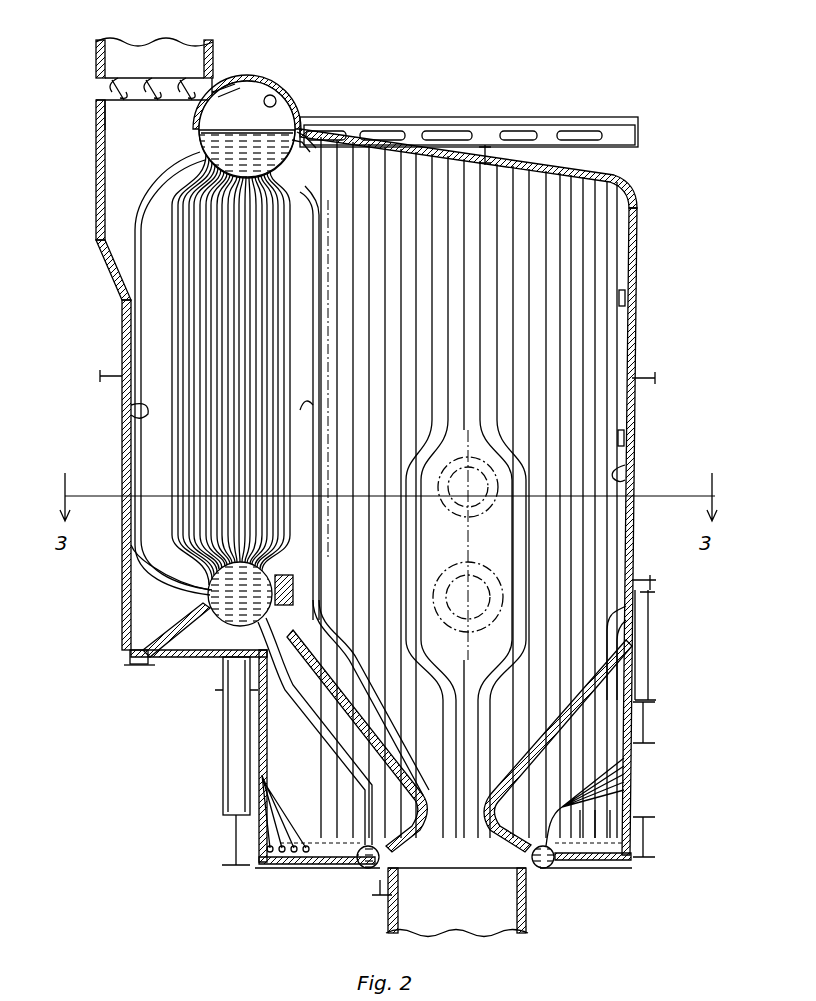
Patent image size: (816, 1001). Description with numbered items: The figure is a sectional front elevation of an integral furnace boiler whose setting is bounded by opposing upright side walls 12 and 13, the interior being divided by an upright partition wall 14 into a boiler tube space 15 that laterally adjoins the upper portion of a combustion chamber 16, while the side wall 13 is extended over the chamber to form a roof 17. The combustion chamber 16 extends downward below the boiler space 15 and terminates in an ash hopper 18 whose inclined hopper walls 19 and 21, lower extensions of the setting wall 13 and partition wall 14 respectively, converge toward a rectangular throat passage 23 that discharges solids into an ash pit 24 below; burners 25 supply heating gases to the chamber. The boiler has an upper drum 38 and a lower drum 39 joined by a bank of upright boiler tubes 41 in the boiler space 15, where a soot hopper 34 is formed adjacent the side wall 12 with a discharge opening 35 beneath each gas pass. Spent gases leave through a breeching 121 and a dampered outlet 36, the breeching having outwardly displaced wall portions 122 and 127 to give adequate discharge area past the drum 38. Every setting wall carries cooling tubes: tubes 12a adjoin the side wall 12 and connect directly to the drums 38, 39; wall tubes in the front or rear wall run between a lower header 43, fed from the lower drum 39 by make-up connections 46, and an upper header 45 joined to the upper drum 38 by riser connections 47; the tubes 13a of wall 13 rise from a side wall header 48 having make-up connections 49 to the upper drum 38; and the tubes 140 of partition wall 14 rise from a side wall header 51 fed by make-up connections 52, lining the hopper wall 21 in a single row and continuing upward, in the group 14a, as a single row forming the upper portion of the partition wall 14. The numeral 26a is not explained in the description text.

The side wall 12 is at (122, 343).
The fluid cooling tubes 12a is at (138, 418).
The side wall 13 is at (634, 335).
The fluid cooling tubes 13a is at (621, 470).
The interior partition wall 14 is at (314, 310).
The tube group 14a is at (320, 464).
The boiler tube space 15 is at (454, 487).
The combustion chamber 16 is at (466, 496).
The roof 17 is at (530, 134).
The ash hopper 18 is at (500, 768).
The inclined hopper wall 19 is at (558, 729).
The inclined hopper wall 21 is at (336, 678).
The throat passage 23 is at (457, 498).
The ash pit 24 is at (450, 902).
The burners 25 is at (452, 578).
The tube bend 26a is at (305, 417).
The soot hopper 34 is at (199, 601).
The discharge opening 35 is at (137, 666).
The dampered outlet 36 is at (159, 46).
The upper boiler drum 38 is at (277, 100).
The lower boiler drum 39 is at (218, 609).
The boiler tubes 41 is at (268, 322).
The lower header 43 is at (620, 868).
The upper header 45 is at (600, 121).
The make-up connections 46 is at (280, 815).
The riser connections 47 is at (456, 130).
The side wall header 48 is at (548, 868).
The make-up connections 49 is at (600, 796).
The side wall header 51 is at (358, 866).
The make-up connections 52 is at (310, 710).
The breeching 121 is at (96, 170).
The outwardly displaced wall portion 122 is at (110, 274).
The outwardly displaced wall portion 127 is at (99, 132).
The fluid cooling tubes 140 is at (372, 727).